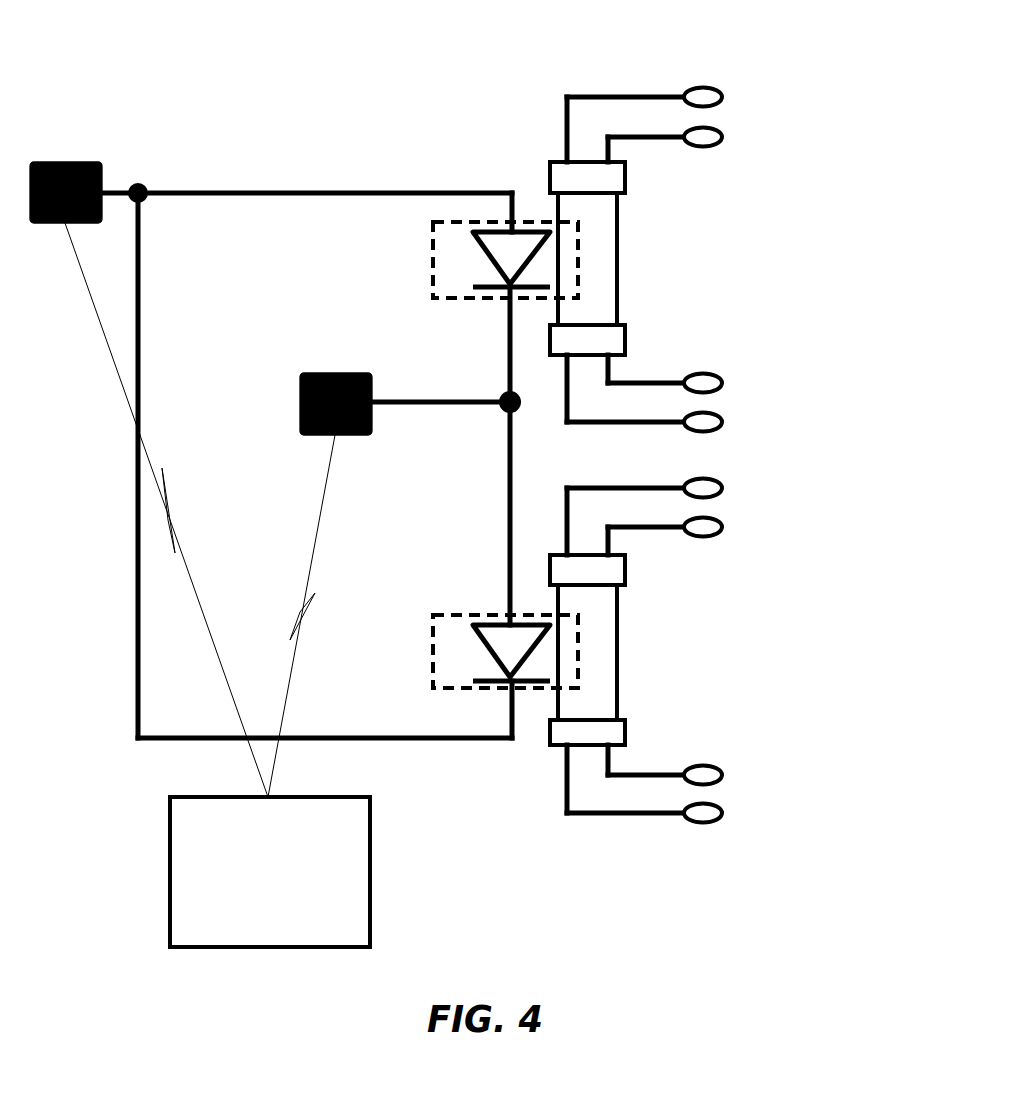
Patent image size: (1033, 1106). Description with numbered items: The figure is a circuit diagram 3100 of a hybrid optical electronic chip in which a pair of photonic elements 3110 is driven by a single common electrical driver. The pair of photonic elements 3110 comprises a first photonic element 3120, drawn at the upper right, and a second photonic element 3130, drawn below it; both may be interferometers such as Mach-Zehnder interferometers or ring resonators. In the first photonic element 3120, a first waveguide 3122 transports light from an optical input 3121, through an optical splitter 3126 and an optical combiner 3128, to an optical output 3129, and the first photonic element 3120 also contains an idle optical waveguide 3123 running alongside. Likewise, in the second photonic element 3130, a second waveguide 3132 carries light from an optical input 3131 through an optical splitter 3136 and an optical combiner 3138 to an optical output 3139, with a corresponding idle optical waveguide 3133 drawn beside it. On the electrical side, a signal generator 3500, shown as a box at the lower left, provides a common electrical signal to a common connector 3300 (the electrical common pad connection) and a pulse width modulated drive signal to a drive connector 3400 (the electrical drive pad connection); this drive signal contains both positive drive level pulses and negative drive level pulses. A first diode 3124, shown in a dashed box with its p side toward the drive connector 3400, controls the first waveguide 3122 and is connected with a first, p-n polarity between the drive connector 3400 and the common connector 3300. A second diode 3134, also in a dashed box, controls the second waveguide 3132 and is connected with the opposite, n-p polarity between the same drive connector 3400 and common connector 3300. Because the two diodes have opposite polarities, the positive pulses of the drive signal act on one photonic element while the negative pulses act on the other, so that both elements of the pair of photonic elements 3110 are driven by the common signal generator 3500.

The circuit diagram 3100 is at (336, 85).
The pair of photonic elements 3110 is at (820, 52).
The first photonic element 3120 is at (712, 70).
The optical input 3121 is at (719, 100).
The first waveguide 3122 is at (558, 262).
The idle optical waveguide 3123 is at (617, 213).
The first diode 3124 is at (508, 255).
The optical splitter 3126 is at (550, 175).
The optical combiner 3128 is at (627, 343).
The optical output 3129 is at (719, 388).
The second photonic element 3130 is at (716, 472).
The optical input 3131 is at (719, 491).
The second waveguide 3132 is at (558, 647).
The idle optical waveguide 3133 is at (617, 689).
The second diode 3134 is at (520, 647).
The optical splitter 3136 is at (627, 568).
The optical combiner 3138 is at (548, 737).
The optical output 3139 is at (719, 779).
The common connector 3300 is at (298, 373).
The drive connector 3400 is at (82, 162).
The signal generator 3500 is at (246, 896).